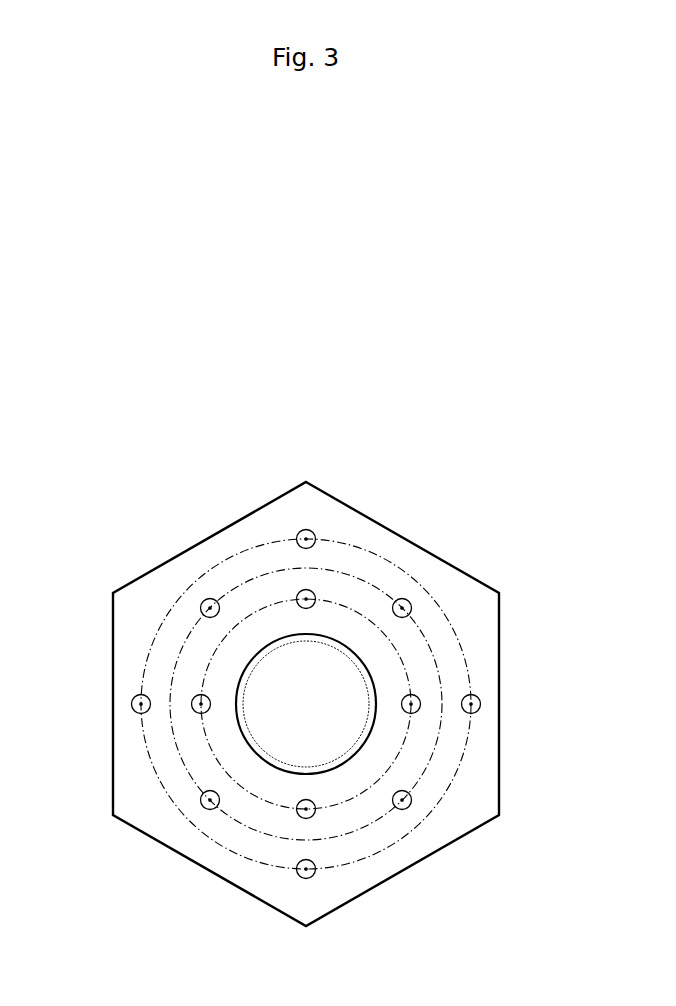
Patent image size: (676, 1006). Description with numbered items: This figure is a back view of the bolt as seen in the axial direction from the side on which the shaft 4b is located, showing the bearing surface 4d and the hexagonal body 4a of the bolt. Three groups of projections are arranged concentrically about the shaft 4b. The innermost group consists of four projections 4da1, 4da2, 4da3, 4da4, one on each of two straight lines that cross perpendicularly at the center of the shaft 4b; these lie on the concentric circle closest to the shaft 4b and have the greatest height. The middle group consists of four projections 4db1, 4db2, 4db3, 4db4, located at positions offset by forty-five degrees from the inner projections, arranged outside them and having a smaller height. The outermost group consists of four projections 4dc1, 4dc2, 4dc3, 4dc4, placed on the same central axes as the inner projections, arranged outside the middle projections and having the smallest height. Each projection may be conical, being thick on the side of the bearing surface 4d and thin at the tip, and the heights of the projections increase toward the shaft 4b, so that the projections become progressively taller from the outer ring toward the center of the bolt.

The hexagonal plate body 4a is at (223, 530).
The shaft 4b is at (238, 728).
The bearing surface 4d is at (372, 551).
The projection 4da1 is at (316, 597).
The projection 4da2 is at (420, 697).
The projection 4da3 is at (307, 819).
The projection 4da4 is at (200, 694).
The projection 4db1 is at (402, 598).
The projection 4db2 is at (402, 810).
The projection 4db3 is at (211, 810).
The projection 4db4 is at (210, 598).
The projection 4dc1 is at (306, 530).
The projection 4dc2 is at (473, 694).
The projection 4dc3 is at (307, 879).
The projection 4dc4 is at (140, 694).